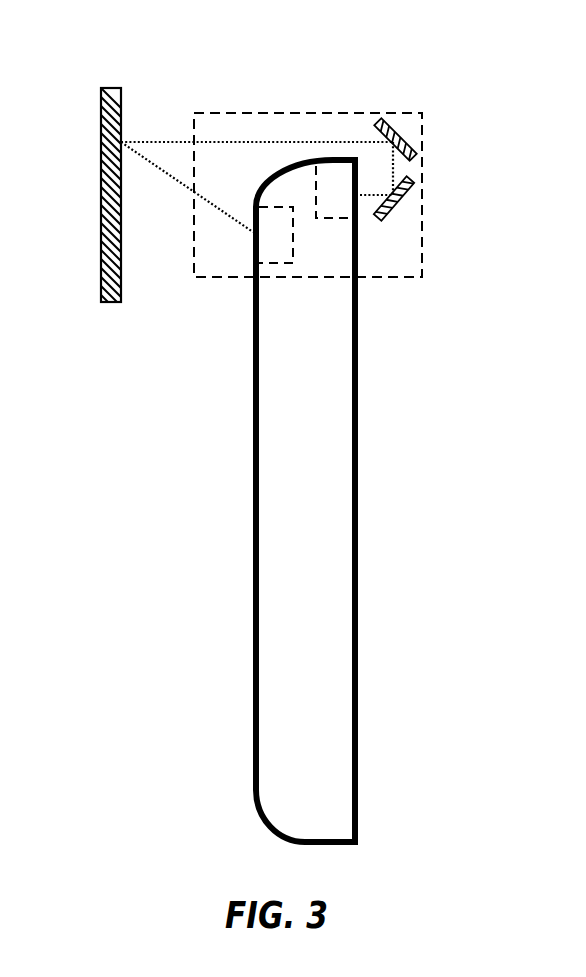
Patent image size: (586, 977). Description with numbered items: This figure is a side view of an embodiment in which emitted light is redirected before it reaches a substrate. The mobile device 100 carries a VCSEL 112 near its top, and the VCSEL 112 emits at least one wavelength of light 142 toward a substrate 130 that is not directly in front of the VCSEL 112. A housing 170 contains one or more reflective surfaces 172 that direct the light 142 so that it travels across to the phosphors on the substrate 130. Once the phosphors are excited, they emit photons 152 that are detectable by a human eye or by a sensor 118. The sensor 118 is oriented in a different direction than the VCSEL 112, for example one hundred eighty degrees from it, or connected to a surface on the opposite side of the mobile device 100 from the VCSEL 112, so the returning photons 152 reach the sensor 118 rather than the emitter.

The mobile device 100 is at (253, 493).
The substrate 130 is at (110, 88).
The light 142 is at (158, 140).
The photons emitted by the phosphors 152 is at (177, 180).
The housing 170 is at (400, 112).
The reflective surfaces 172 is at (402, 137).
The VCSEL 112 is at (338, 190).
The sensor 118 is at (272, 240).